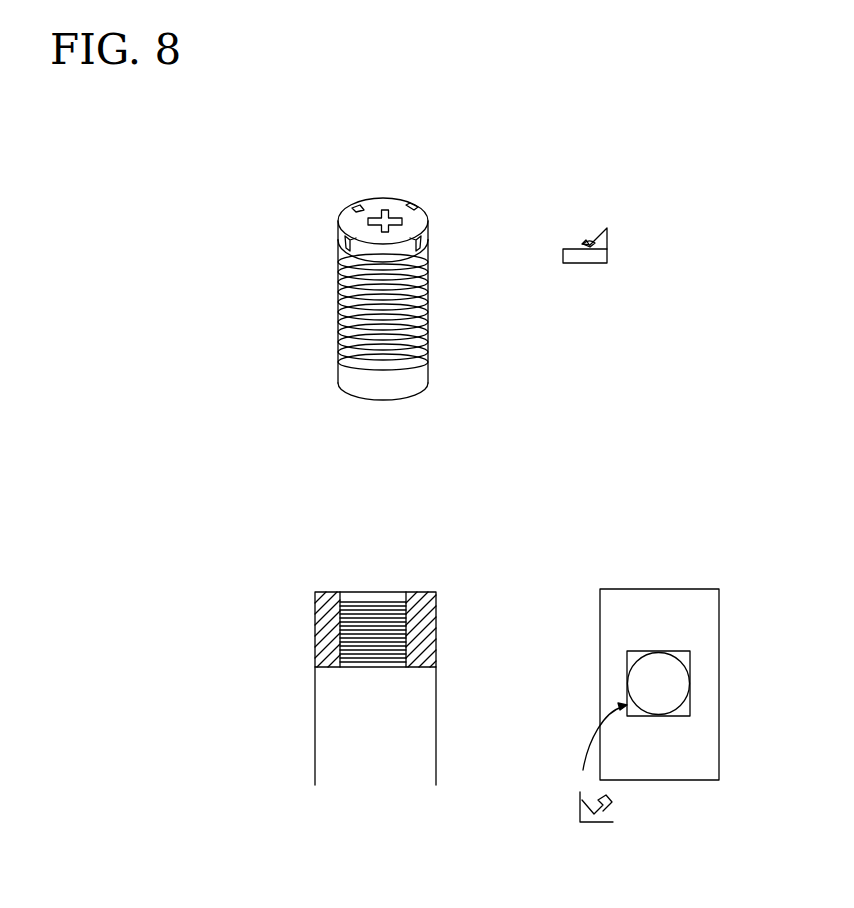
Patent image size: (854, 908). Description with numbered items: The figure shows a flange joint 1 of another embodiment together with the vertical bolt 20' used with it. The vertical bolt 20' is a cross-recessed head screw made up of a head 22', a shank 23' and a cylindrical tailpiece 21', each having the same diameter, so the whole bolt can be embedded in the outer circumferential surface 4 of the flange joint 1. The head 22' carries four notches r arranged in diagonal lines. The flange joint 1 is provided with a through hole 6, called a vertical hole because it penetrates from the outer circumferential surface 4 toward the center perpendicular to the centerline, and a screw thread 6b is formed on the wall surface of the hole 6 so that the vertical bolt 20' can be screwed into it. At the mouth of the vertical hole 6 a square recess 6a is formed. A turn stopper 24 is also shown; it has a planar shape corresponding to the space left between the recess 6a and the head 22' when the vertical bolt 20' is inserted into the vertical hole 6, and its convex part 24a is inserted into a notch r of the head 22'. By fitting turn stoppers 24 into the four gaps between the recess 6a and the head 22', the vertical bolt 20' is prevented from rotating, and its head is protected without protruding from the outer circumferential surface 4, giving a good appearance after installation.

The vertical bolt 20' is at (401, 273).
The head 22' is at (408, 230).
The shank 23' is at (410, 312).
The tailpiece 21' is at (411, 320).
The notch r is at (352, 207).
The turn stopper 24 is at (576, 529).
The convex part 24a is at (585, 242).
The flange joint 1 is at (534, 649).
The outer circumferential surface 4 is at (685, 622).
The through hole 6 is at (670, 682).
The square recess 6a is at (404, 600).
The screw thread 6b is at (400, 650).